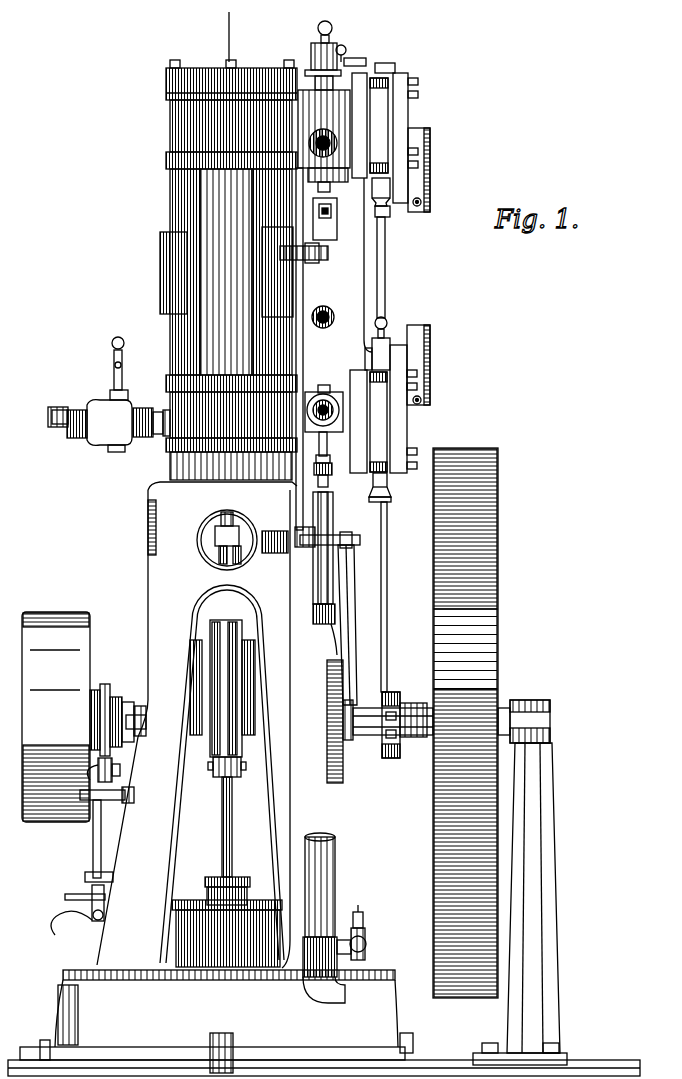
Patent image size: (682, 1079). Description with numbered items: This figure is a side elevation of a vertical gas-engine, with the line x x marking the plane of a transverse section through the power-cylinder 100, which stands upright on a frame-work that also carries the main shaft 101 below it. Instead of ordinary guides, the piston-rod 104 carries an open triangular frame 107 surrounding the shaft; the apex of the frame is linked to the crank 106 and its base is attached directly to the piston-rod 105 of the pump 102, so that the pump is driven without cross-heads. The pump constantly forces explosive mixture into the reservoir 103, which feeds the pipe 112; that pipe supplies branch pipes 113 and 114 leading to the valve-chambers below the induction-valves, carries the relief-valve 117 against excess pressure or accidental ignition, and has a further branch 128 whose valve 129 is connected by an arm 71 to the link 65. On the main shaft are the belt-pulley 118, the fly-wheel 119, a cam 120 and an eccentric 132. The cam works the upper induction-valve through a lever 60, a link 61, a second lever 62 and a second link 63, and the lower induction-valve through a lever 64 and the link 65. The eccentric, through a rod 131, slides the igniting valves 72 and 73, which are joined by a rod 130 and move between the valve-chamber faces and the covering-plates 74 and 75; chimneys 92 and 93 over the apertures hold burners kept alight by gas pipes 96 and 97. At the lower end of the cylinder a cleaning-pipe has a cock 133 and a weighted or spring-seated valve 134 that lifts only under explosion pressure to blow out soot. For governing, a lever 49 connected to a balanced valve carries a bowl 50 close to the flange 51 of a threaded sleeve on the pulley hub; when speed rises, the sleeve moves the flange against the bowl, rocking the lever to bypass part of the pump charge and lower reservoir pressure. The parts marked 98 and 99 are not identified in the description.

The section line x is at (237, 34).
The power-cylinder 100 is at (228, 270).
The branch pipe 113 is at (335, 106).
The second link 63 is at (330, 240).
The second lever 62 is at (316, 258).
The link 61 is at (304, 296).
The branch pipe 114 is at (332, 325).
The valve 72 is at (390, 66).
The covering-plate 74 is at (410, 112).
The chimney 92 is at (430, 150).
The gas pipe 96 is at (422, 203).
The rod 130 is at (386, 255).
The valve 73 is at (377, 354).
The covering-plate 75 is at (406, 430).
The chimney 93 is at (430, 348).
The gas pipe 97 is at (422, 402).
The rod 131 is at (388, 580).
The branch pipe 128 is at (338, 406).
The valve 129 is at (336, 424).
The arm 71 is at (330, 475).
The link 65 is at (334, 520).
The lever 64 is at (336, 634).
The lever 60 is at (352, 585).
The cam 120 is at (343, 760).
The main shaft 101 is at (412, 738).
The eccentric 132 is at (398, 702).
The fly-wheel 119 is at (465, 723).
The belt-pulley 118 is at (56, 717).
The flange 51 is at (106, 696).
The bowl 50 is at (112, 764).
The lever 49 is at (100, 832).
The pin 98 is at (82, 884).
The hook lever 99 is at (92, 908).
The piston-rod 104 is at (226, 512).
The open triangular frame 107 is at (246, 560).
The crank 106 is at (250, 676).
The pump piston-rod 105 is at (232, 840).
The pump 102 is at (227, 922).
The reservoir 103 is at (324, 1023).
The pipe 112 is at (334, 855).
The relief-valve 117 is at (366, 945).
The weighted or spring-seated valve 134 is at (99, 394).
The cock 133 is at (142, 406).